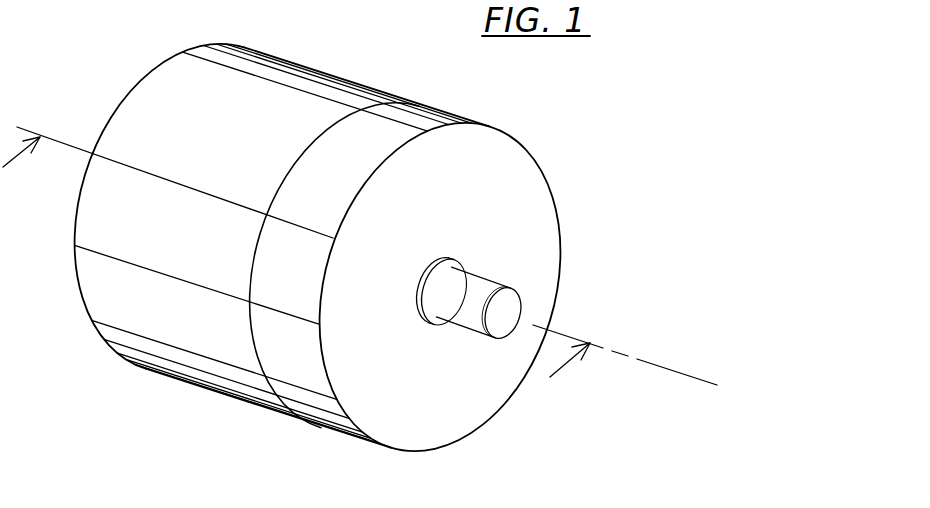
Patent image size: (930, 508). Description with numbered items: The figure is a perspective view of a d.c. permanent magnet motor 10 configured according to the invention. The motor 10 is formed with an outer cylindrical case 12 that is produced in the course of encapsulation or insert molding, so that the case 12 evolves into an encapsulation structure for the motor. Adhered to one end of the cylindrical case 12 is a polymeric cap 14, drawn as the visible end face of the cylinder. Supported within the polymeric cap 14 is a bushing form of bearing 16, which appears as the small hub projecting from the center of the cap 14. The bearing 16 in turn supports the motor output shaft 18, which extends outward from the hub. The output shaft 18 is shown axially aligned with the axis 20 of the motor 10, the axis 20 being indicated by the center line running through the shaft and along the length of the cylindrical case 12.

The d.c. PM motor 10 is at (339, 244).
The outer cylindrical case 12 is at (344, 94).
The polymeric cap 14 is at (507, 172).
The bearing 16 is at (442, 326).
The motor output shaft 18 is at (507, 302).
The axis 20 is at (677, 367).